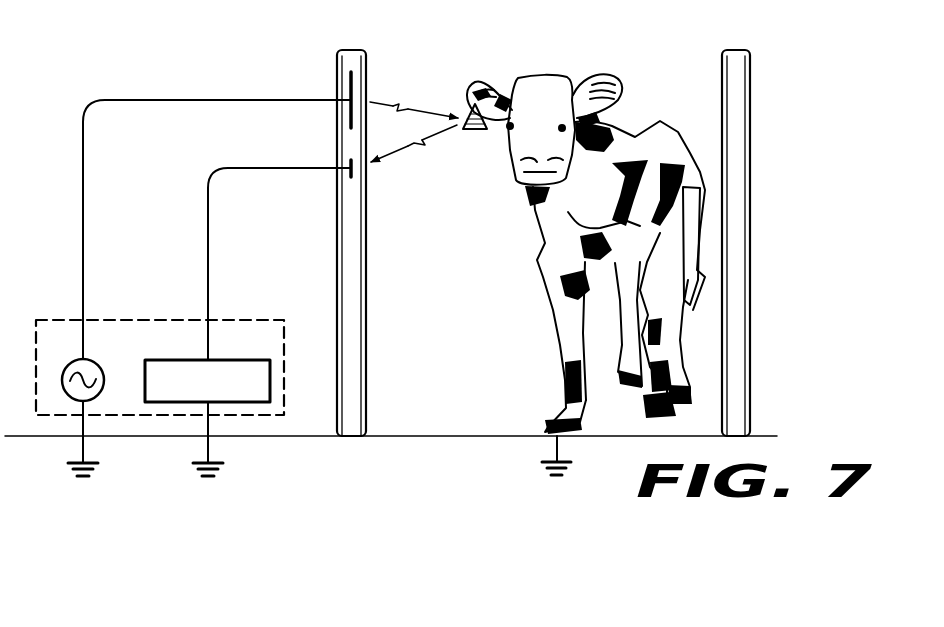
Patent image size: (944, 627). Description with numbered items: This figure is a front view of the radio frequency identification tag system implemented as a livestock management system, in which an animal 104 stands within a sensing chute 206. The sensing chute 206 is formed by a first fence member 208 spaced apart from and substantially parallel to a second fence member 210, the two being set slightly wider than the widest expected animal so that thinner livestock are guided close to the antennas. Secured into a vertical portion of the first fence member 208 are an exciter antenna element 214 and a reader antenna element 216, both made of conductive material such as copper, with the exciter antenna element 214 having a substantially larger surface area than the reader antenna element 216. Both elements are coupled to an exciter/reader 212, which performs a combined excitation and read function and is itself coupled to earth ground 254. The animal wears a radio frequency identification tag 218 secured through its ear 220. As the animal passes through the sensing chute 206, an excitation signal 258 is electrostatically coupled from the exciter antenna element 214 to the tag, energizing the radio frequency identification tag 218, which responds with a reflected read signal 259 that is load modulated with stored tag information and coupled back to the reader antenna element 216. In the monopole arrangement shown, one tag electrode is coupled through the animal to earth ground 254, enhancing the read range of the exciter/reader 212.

The animal (calf) 104 is at (662, 125).
The sensing chute 206 is at (626, 55).
The first fence member 208 is at (343, 50).
The second fence member 210 is at (734, 50).
The exciter/reader 212 is at (133, 320).
The exciter antenna element 214 is at (348, 130).
The reader antenna element 216 is at (348, 176).
The radio frequency identification tag 218 is at (475, 131).
The ear 220 is at (484, 82).
The earth ground 254 is at (190, 478).
The excitation signal 258 is at (400, 104).
The reflected read signal 259 is at (399, 156).